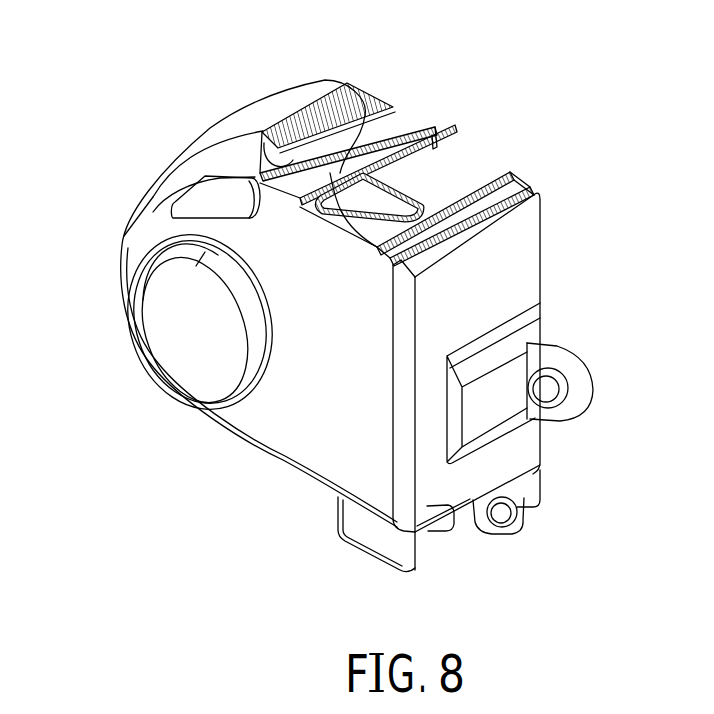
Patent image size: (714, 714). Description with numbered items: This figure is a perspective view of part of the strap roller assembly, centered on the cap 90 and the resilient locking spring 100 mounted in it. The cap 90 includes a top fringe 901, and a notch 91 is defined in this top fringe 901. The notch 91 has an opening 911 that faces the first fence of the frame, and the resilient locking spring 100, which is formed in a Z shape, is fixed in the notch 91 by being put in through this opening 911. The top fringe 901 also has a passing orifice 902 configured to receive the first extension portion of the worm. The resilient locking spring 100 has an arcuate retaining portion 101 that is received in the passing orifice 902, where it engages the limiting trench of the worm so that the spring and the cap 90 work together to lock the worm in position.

The cap 90 is at (242, 456).
The top fringe 901 is at (290, 116).
The notch 91 is at (364, 83).
The opening 911 is at (430, 135).
The arcuate retaining portion 101 is at (415, 166).
The passing orifice 902 is at (454, 176).
The resilient locking spring 100 is at (327, 238).